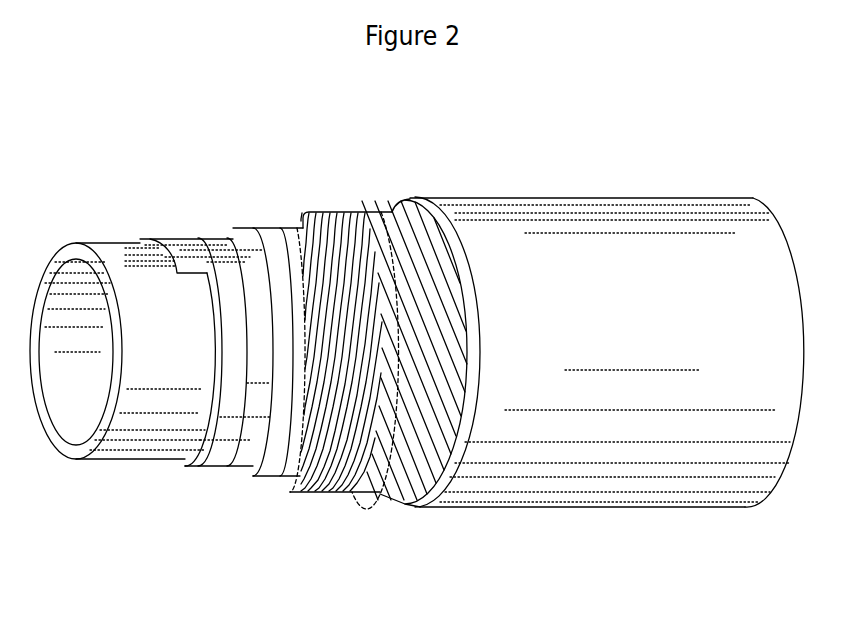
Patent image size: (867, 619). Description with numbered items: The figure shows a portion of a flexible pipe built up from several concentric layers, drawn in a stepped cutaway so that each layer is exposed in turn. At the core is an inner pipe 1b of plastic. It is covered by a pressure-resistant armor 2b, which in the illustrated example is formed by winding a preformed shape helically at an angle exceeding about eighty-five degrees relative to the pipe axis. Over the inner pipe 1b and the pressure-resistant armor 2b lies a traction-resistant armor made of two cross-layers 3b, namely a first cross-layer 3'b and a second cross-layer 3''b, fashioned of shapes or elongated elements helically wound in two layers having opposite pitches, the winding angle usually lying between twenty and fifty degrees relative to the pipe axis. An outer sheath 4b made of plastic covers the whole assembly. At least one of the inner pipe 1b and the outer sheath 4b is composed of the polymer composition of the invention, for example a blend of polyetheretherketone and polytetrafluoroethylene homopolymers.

The inner pipe 1b is at (117, 394).
The pressure-resistant armor 2b is at (215, 392).
The cross-layers of traction-resistant armor 3b is at (433, 549).
The first cross-layer 3'b is at (312, 383).
The second cross-layer 3''b is at (414, 376).
The outer sheath 4b is at (530, 453).